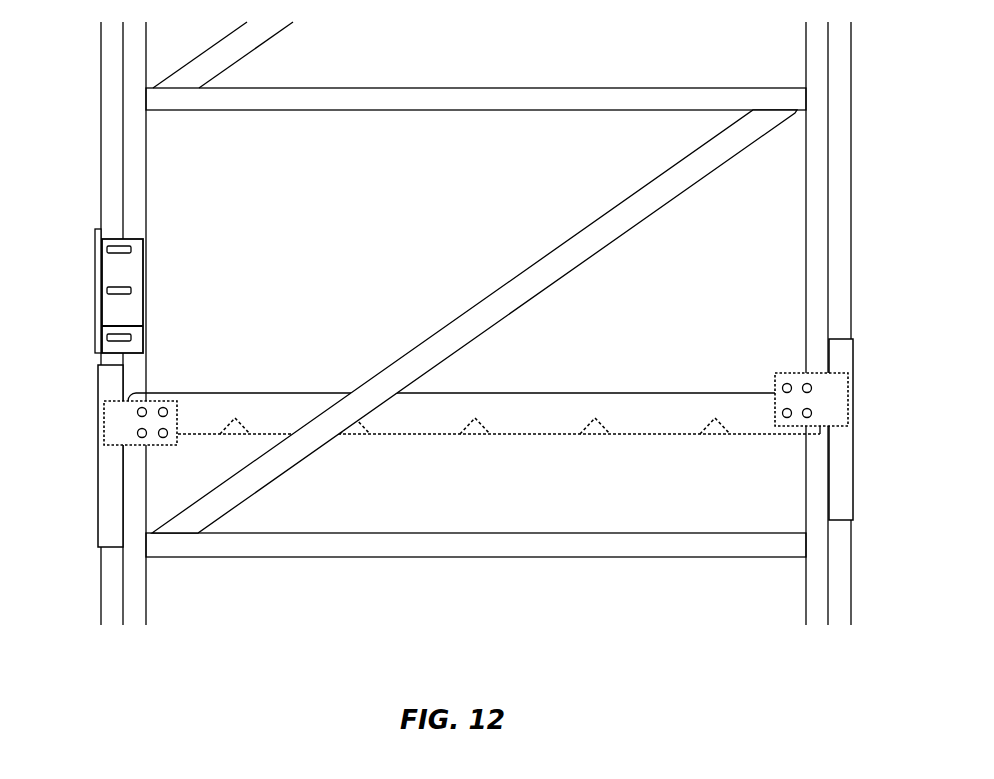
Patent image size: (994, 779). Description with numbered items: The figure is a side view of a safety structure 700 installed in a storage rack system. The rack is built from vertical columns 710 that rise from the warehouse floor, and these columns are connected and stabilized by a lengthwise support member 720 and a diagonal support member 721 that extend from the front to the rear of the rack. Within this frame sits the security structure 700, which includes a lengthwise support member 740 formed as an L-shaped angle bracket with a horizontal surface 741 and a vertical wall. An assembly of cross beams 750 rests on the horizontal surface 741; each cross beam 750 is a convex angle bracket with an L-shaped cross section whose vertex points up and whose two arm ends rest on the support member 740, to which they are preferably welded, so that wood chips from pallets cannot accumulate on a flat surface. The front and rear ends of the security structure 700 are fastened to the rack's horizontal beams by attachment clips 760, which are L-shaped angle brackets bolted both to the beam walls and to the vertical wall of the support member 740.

The safety structure 700 is at (474, 323).
The vertical column 710 is at (133, 143).
The lengthwise support member 720 is at (481, 551).
The diagonal support member 721 is at (555, 262).
The lengthwise support member 740 is at (630, 395).
The horizontal surface 741 is at (630, 434).
The cross beam 750 is at (475, 418).
The attachment clip 760 is at (177, 422).